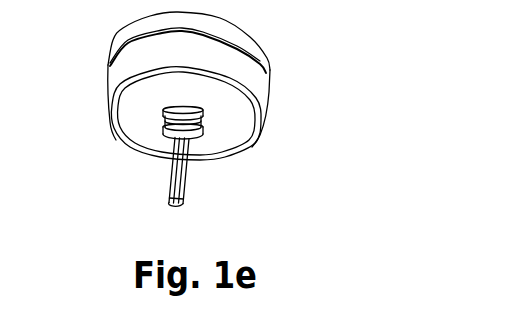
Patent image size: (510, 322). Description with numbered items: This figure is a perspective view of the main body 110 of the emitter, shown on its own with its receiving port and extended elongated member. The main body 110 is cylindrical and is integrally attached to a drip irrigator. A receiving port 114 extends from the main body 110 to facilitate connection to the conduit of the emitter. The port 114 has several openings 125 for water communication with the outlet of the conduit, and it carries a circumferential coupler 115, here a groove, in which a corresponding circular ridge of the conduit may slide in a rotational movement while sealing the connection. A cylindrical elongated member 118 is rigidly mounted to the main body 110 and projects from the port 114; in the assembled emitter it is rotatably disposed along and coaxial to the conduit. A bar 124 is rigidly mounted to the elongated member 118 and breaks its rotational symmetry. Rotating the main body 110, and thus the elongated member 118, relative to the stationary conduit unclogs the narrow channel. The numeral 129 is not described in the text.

The main body 110 is at (266, 106).
The rim ring 129 is at (266, 55).
The circumferential coupler 115 is at (164, 120).
The receiving port 114 is at (190, 141).
The openings 125 is at (170, 142).
The elongated member 118 is at (186, 177).
The bar 124 is at (170, 178).